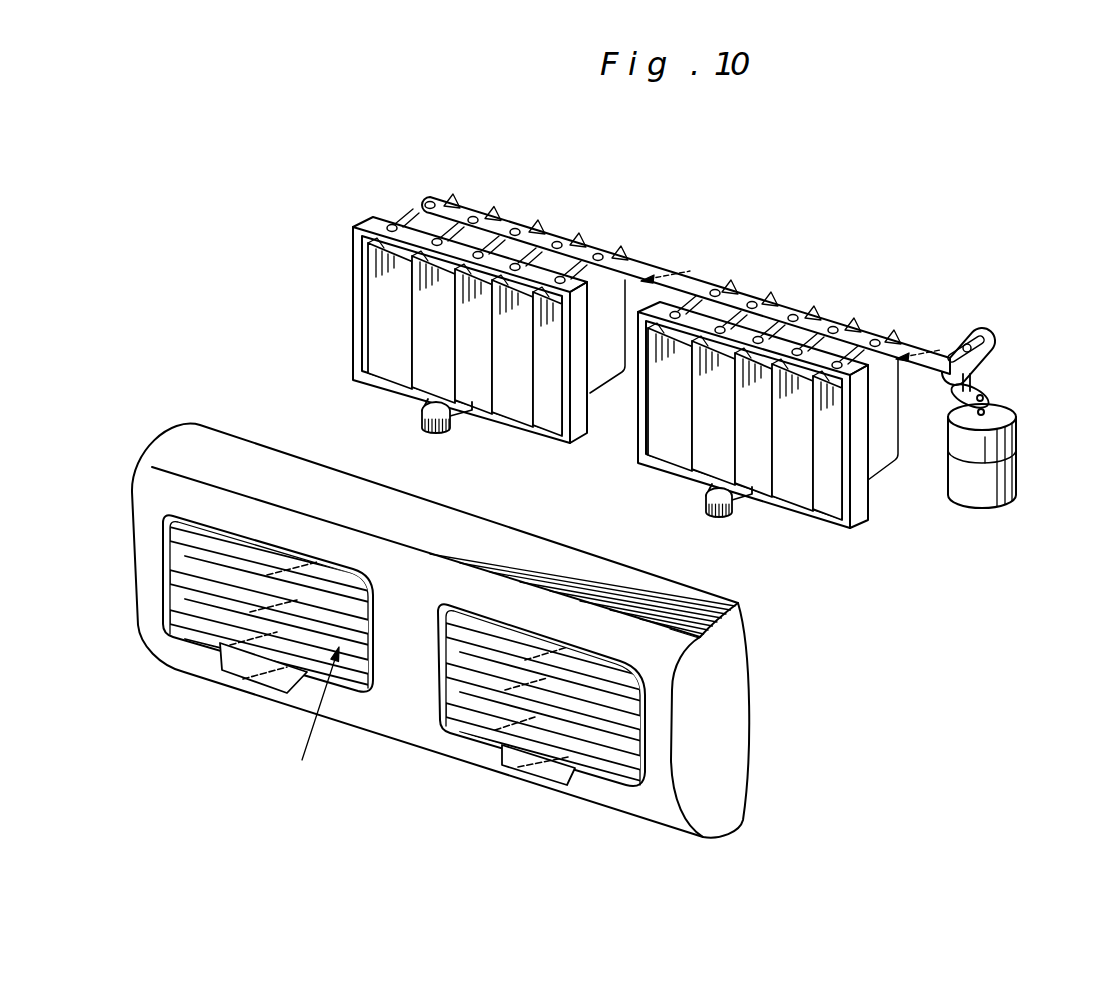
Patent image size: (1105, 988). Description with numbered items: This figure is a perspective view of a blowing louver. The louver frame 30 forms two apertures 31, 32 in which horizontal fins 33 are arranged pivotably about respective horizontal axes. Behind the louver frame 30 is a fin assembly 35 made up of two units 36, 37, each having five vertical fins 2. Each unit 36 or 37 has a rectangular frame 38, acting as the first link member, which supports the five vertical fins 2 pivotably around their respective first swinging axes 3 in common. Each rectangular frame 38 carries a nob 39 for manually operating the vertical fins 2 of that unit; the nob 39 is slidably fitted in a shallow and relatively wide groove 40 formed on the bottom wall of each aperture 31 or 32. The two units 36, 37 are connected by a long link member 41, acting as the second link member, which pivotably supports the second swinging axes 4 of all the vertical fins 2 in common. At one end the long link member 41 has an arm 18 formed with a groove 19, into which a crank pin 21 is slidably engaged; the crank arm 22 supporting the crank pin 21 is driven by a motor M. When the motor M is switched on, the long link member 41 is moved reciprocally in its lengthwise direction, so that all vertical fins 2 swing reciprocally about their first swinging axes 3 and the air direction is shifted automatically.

The vertical fins 2 is at (383, 320).
The first swinging axes 3 is at (390, 226).
The second swinging axes 4 is at (432, 203).
The arm 18 is at (996, 338).
The groove 19 is at (988, 336).
The crank pin 21 is at (967, 345).
The crank arm 22 is at (982, 386).
The louver frame 30 is at (185, 462).
The aperture 31 is at (312, 722).
The aperture 32 is at (598, 732).
The horizontal fins 33 is at (479, 627).
The fin assembly 35 is at (678, 250).
The unit 36 is at (417, 238).
The unit 37 is at (706, 322).
The rectangular frame 38 is at (350, 278).
The nob 39 is at (423, 421).
The groove 40 is at (237, 665).
The long link member 41 is at (496, 222).
The motor M is at (1017, 466).